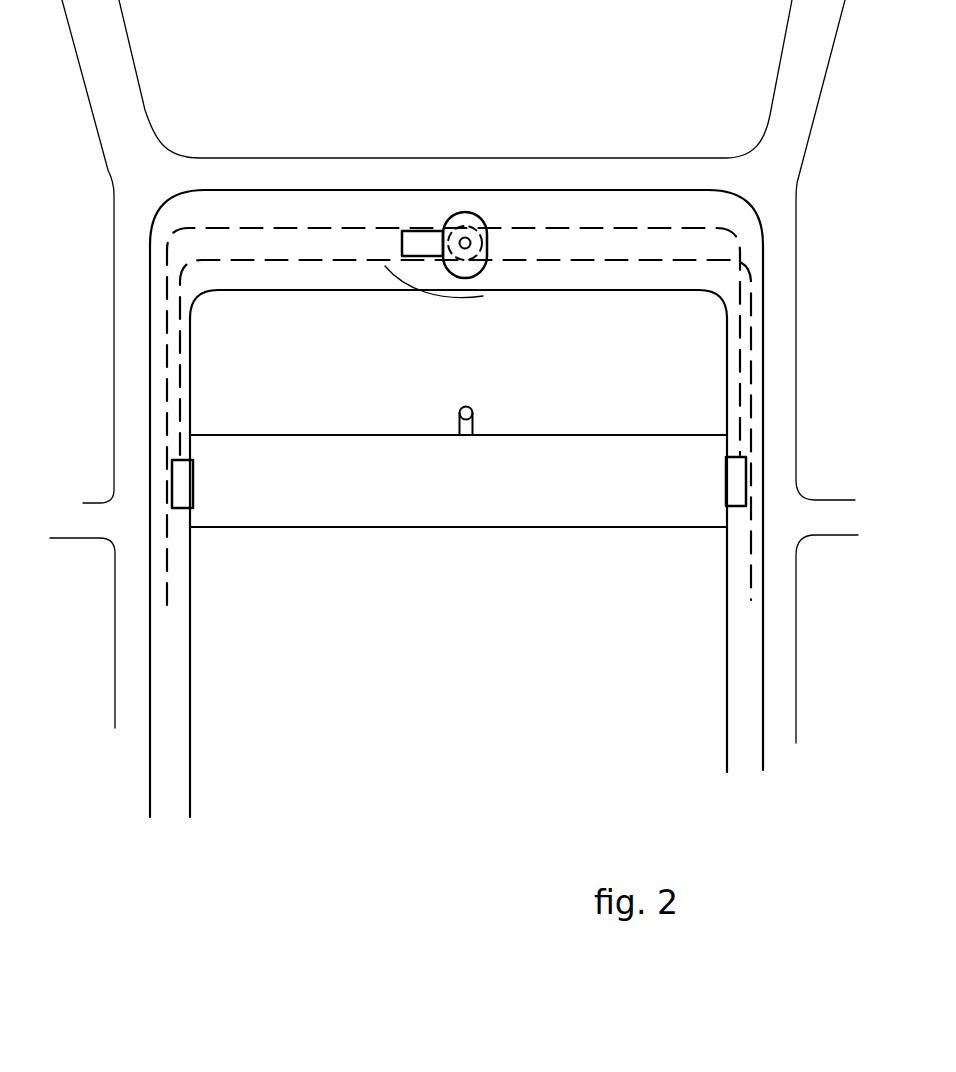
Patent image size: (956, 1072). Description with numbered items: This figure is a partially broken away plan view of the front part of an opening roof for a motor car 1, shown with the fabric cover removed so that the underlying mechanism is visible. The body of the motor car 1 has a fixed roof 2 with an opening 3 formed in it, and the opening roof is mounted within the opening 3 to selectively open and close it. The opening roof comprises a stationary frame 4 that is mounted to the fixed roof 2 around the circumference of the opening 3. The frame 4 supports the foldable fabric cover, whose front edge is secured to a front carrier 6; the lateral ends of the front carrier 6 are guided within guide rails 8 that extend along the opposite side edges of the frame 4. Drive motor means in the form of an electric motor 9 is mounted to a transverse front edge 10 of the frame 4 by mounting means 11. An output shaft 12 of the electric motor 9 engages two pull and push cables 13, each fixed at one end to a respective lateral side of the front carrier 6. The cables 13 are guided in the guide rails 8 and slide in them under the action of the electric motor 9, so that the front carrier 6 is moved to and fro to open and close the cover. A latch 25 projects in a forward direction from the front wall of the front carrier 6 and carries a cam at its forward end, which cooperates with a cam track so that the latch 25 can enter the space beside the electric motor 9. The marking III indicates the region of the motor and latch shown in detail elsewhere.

The motor car 1 is at (256, 140).
The fixed roof 2 is at (295, 172).
The opening 3 is at (327, 318).
The stationary frame 4 is at (362, 190).
The front carrier 6 is at (485, 510).
The guide rails 8 is at (180, 597).
The electric motor 9 is at (418, 240).
The transverse front edge 10 is at (612, 270).
The mounting means 11 is at (463, 215).
The output shaft 12 is at (474, 237).
The pull and push cables 13 is at (570, 258).
The latch 25 is at (458, 436).
The section III detail III is at (428, 292).